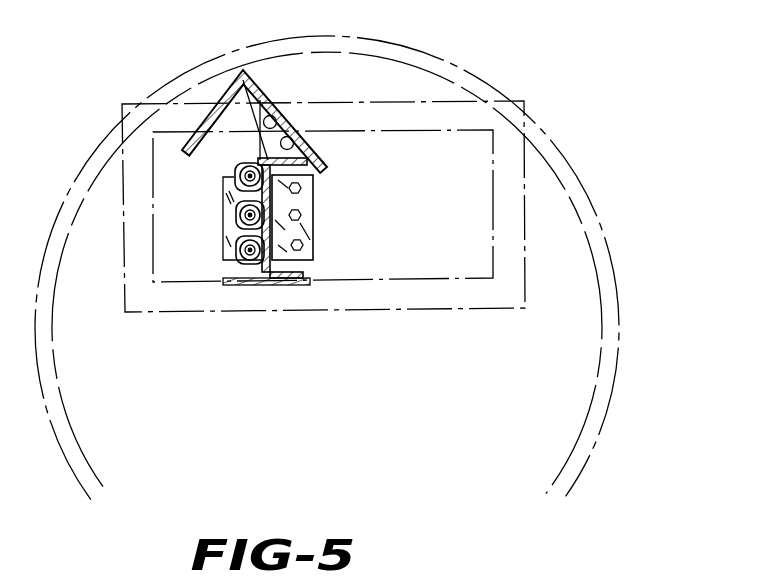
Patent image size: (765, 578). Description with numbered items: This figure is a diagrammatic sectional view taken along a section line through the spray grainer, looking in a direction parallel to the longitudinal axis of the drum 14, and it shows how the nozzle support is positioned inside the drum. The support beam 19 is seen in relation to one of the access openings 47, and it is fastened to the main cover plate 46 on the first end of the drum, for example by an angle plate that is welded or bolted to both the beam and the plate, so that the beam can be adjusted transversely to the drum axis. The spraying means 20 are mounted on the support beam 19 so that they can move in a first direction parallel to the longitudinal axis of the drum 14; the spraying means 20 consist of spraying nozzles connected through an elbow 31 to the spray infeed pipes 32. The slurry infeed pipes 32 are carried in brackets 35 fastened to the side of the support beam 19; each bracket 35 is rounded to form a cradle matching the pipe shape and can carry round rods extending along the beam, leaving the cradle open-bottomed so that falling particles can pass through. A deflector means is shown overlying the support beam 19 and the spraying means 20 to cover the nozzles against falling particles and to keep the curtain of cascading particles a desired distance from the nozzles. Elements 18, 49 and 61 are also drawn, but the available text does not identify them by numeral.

The drum 14 is at (603, 353).
The roof member 18 is at (250, 88).
The support beam 19 is at (302, 272).
The spraying means 20 is at (104, 218).
The elbow 31 is at (253, 285).
The spray infeed pipes 32 is at (223, 196).
The brackets 35 is at (238, 231).
The main cover plate 46 is at (520, 112).
The access opening 47 is at (496, 240).
The mounting plate 49 is at (313, 208).
The upper roller 61 is at (245, 166).